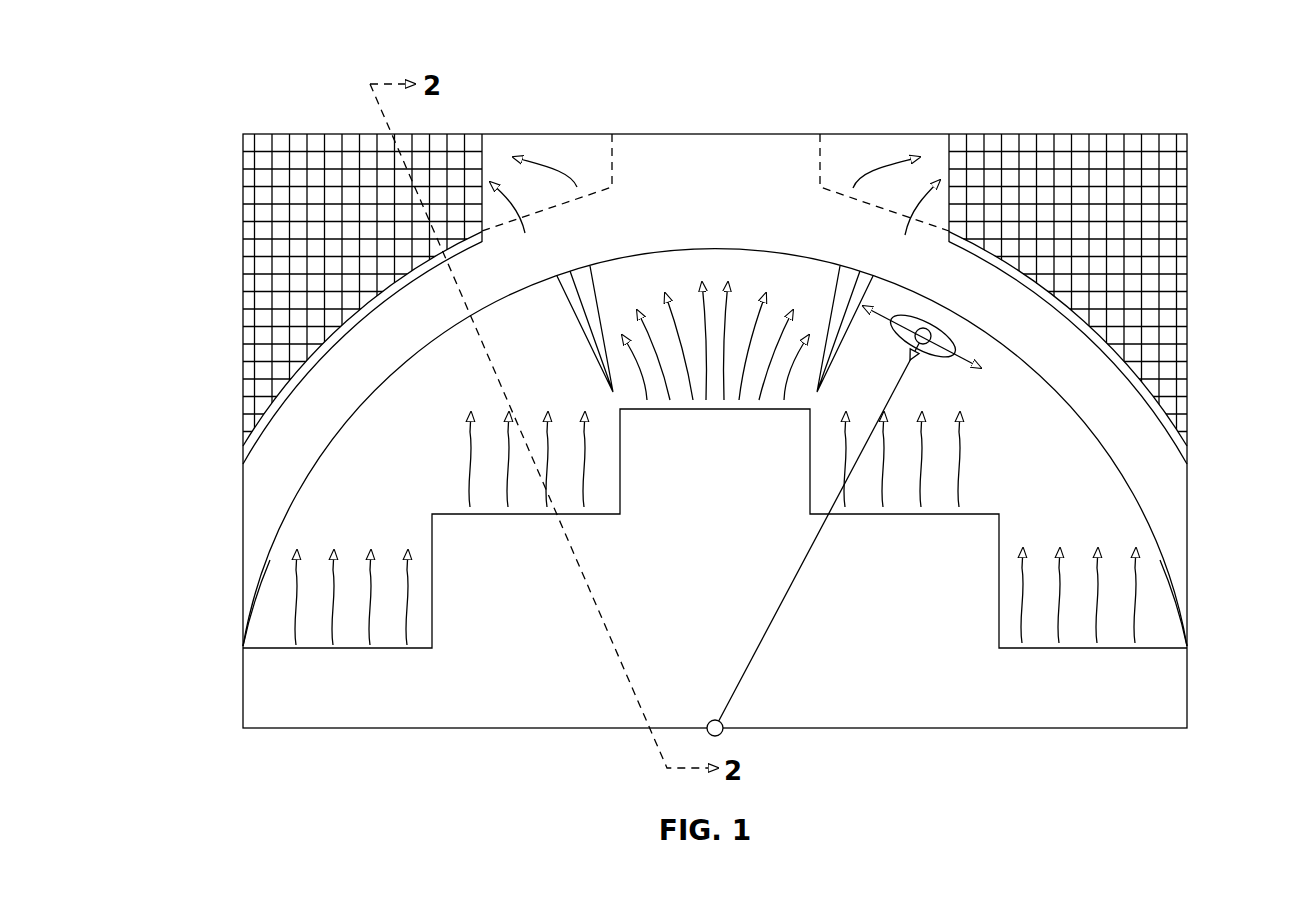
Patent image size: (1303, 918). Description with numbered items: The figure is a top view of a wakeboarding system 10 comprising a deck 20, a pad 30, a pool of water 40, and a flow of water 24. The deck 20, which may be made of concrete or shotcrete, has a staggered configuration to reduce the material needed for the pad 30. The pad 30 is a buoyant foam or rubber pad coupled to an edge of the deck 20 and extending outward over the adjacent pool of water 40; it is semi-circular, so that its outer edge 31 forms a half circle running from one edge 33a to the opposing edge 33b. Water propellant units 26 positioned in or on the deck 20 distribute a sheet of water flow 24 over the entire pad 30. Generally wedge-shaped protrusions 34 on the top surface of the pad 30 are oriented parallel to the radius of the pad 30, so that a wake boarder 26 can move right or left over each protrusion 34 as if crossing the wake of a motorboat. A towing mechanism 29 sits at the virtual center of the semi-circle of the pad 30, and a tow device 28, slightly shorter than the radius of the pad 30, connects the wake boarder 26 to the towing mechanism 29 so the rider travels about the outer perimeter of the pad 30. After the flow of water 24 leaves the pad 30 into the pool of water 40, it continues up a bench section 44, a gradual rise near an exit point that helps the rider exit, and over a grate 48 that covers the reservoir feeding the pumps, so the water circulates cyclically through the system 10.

The wakeboarding system 10 is at (228, 66).
The deck 20 is at (695, 467).
The flow of water 24 is at (577, 187).
The wake boarder 26 is at (912, 320).
The tow device 28 is at (782, 608).
The towing mechanism 29 is at (724, 735).
The pad 30 is at (518, 365).
The outer edge 31 is at (718, 248).
The edge 33a is at (1177, 597).
The opposing edge 33b is at (260, 590).
The protrusion 34 is at (580, 272).
The pool of water 40 is at (270, 460).
The bench section 44 is at (587, 165).
The grate 48 is at (280, 148).